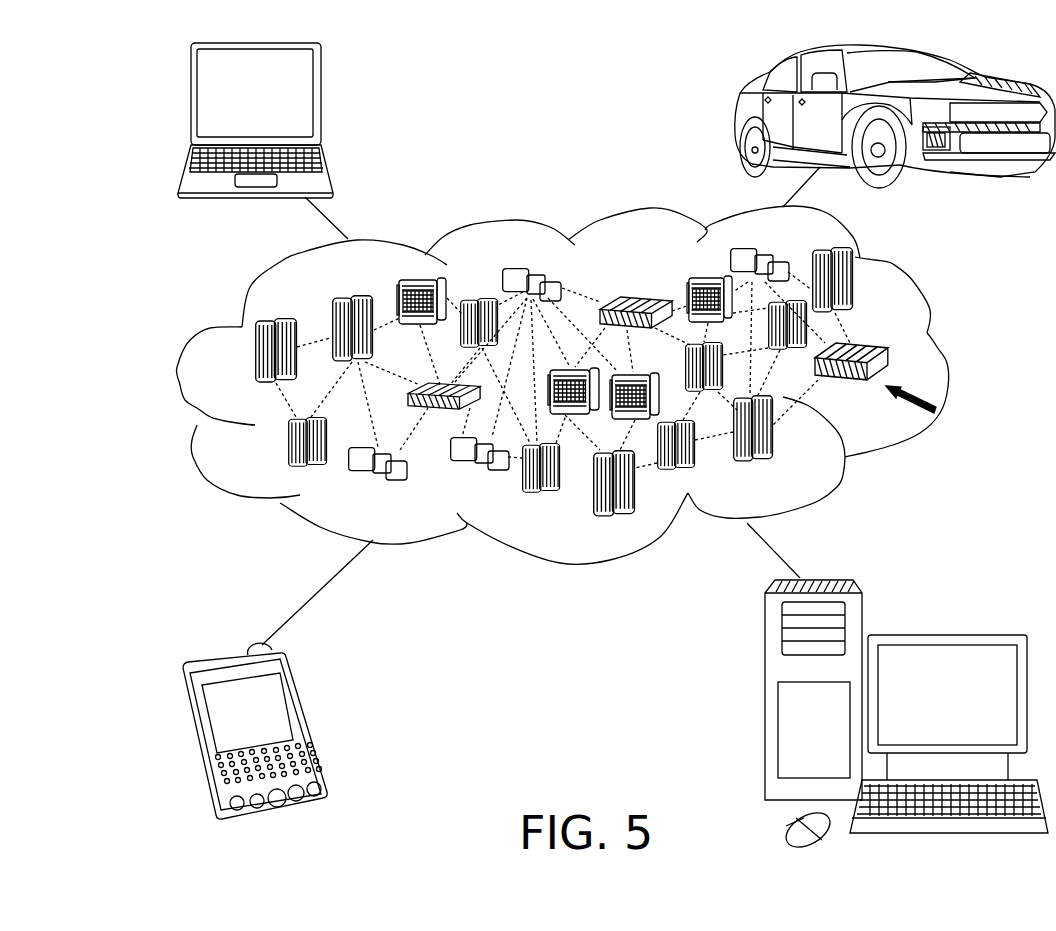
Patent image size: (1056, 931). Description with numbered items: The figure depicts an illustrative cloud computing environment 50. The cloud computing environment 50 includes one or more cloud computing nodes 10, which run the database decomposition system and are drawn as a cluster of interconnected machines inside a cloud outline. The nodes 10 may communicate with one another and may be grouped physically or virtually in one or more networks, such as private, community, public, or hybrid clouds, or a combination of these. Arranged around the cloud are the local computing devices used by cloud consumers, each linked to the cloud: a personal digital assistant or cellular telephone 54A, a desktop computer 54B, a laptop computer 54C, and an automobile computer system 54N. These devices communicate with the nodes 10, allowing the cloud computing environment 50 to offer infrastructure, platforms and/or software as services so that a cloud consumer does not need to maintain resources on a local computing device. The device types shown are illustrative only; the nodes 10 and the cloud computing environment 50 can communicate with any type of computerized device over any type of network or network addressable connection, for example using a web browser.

The cloud computing environment 50 is at (588, 385).
The cloud computing node 10 is at (933, 413).
The personal digital assistant or cellular telephone 54A is at (310, 728).
The desktop computer 54B is at (943, 632).
The laptop computer 54C is at (322, 103).
The automobile computer system 54N is at (733, 115).